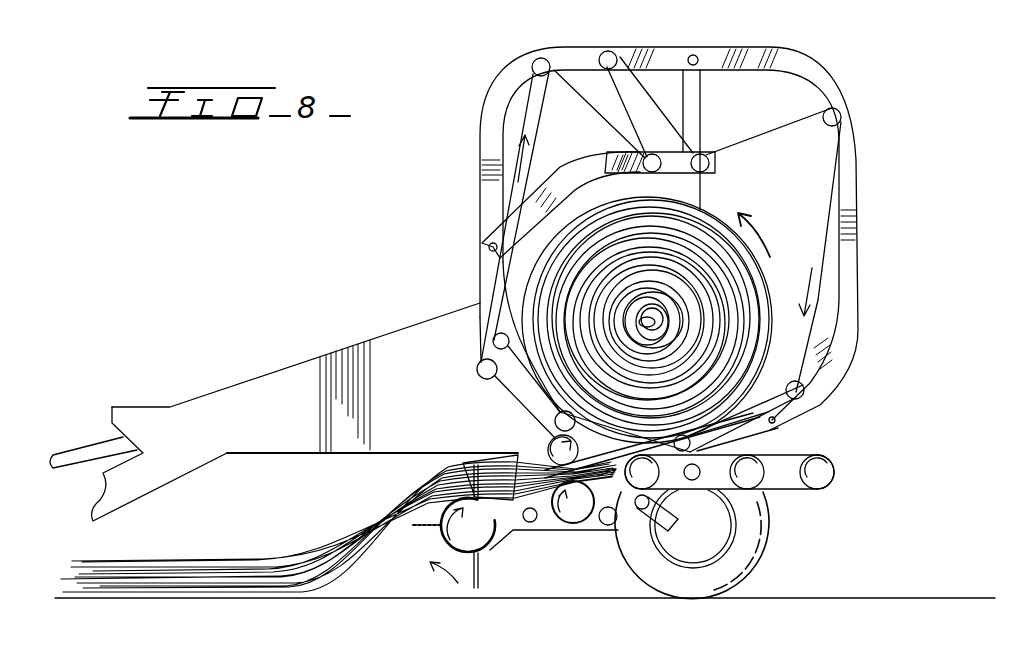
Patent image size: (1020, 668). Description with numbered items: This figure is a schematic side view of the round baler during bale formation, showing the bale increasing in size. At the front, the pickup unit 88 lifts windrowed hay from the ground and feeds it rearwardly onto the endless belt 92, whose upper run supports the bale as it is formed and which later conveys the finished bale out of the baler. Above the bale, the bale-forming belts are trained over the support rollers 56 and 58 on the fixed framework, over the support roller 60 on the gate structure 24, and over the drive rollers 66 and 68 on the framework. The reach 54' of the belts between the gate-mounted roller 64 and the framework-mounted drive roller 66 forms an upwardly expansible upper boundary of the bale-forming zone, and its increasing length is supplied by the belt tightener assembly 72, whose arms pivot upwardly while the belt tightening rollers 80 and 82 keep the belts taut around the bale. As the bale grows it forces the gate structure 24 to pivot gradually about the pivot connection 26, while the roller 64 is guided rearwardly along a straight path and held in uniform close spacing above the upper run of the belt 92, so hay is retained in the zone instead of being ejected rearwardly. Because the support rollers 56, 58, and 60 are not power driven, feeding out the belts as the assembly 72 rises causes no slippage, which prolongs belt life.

The gate structure 24 is at (838, 96).
The pivot connection 26 is at (693, 55).
The reach of the belts 54' is at (647, 307).
The support roller 56 is at (540, 58).
The support roller 58 is at (608, 51).
The support roller 60 is at (843, 114).
The gate-mounted roller 64 is at (683, 452).
The drive roller 66 is at (555, 422).
The drive roller 68 is at (477, 369).
The belt tightener assembly 72 is at (566, 170).
The belt tightening roller 80 is at (645, 158).
The belt tightening roller 82 is at (707, 158).
The pickup unit 88 is at (501, 551).
The endless belt 92 is at (796, 455).